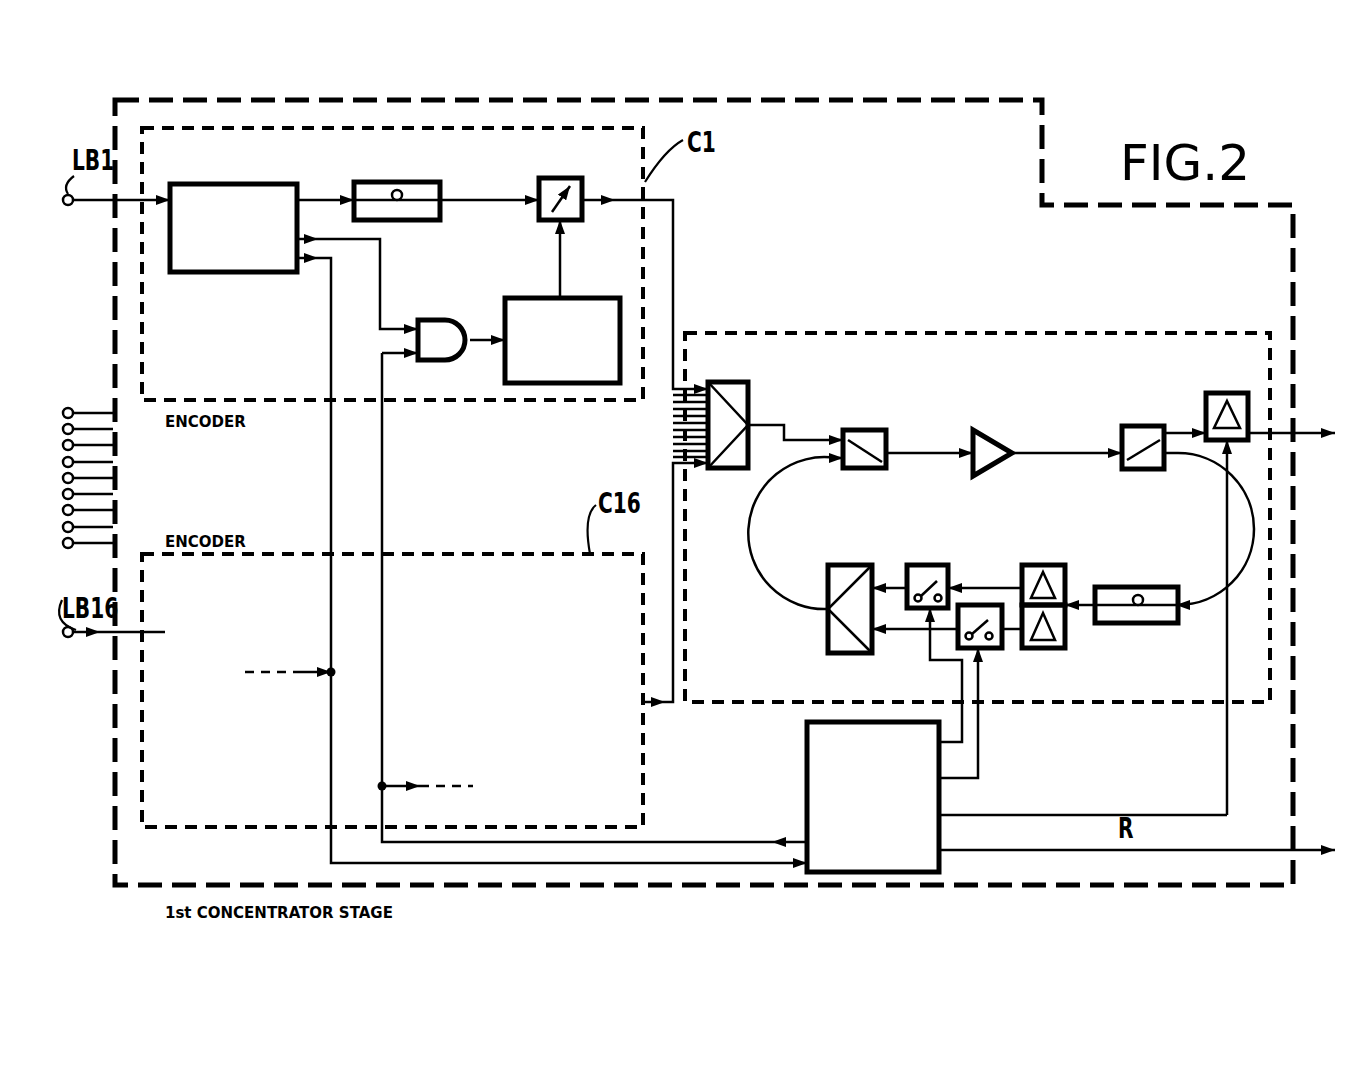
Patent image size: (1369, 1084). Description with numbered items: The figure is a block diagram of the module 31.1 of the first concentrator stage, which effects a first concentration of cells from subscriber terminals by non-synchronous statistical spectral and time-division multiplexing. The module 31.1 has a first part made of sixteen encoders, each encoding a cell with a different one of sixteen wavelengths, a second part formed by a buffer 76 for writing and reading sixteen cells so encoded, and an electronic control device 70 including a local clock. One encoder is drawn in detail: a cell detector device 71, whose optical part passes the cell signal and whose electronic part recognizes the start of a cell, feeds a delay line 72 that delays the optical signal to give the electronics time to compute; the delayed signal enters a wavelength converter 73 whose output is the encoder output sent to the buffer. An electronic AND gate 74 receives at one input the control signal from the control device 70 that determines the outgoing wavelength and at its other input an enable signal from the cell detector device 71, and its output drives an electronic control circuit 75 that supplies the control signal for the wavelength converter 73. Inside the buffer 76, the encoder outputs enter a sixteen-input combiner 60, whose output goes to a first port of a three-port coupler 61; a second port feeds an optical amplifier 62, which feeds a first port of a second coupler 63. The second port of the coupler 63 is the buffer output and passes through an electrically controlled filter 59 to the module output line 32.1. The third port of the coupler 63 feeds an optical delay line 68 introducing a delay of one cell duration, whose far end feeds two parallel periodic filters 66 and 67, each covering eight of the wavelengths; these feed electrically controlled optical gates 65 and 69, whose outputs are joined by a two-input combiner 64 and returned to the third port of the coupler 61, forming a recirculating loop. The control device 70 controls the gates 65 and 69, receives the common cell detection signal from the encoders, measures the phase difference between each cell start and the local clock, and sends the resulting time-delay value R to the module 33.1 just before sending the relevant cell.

The electrically controlled filter 59 is at (1217, 393).
The combiner 60 is at (748, 398).
The three-port coupler 61 is at (855, 432).
The optical amplifier 62 is at (992, 437).
The three-port coupler 63 is at (1138, 427).
The two-input combiner 64 is at (865, 567).
The electrically controlled optical gate 65 is at (923, 565).
The periodic filter 66 is at (1032, 570).
The periodic filter 67 is at (1067, 645).
The optical delay line 68 is at (1117, 588).
The electrically controlled optical gate 69 is at (992, 648).
The electronic control device 70 is at (807, 776).
The cell detector device 71 is at (248, 190).
The delay line 72 is at (398, 183).
The wavelength converter 73 is at (555, 182).
The electronic AND gate 74 is at (446, 322).
The electronic control circuit 75 is at (532, 310).
The buffer 76 is at (858, 333).
The module 31.1 is at (1123, 120).
The output line 32.1 is at (1335, 404).
The module 33.1 is at (1312, 847).